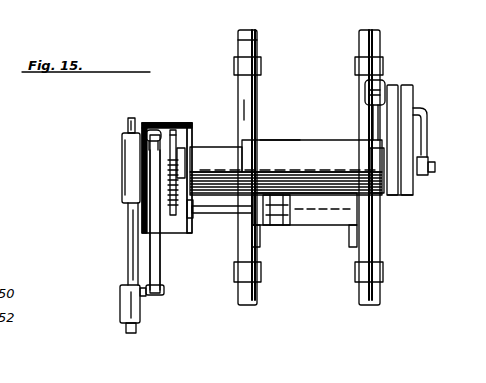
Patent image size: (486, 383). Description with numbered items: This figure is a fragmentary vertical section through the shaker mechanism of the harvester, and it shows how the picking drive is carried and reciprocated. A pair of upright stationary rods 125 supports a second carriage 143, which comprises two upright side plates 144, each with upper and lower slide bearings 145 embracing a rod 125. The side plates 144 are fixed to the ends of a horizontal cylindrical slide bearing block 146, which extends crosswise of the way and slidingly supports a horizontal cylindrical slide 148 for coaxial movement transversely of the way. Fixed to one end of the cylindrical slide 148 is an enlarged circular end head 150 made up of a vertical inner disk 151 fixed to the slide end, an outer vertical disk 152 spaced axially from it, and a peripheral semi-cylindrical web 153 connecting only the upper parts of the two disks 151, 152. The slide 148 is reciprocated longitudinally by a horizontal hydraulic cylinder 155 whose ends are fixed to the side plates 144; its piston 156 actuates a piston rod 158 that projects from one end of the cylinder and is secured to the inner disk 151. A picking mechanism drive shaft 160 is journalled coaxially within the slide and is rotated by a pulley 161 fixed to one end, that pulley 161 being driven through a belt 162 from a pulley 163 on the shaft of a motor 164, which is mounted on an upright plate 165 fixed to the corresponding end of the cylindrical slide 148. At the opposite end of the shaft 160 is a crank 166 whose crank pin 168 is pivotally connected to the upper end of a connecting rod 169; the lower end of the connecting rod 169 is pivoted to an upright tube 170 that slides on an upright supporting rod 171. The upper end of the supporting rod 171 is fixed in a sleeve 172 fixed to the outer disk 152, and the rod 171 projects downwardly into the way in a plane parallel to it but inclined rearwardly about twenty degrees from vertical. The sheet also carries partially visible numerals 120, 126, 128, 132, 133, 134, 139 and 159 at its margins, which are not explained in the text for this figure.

The assembly 120 is at (428, 68).
The stationary rod 125 is at (238, 37).
The member 126 is at (485, 325).
The member 128 is at (485, 300).
The member 132 is at (485, 182).
The member 133 is at (485, 280).
The member 134 is at (485, 266).
The member 139 is at (485, 205).
The second carriage 143 is at (266, 62).
The side plate 144 is at (248, 107).
The slide bearing 145 is at (262, 70).
The slide bearing block 146 is at (278, 140).
The cylindrical slide 148 is at (232, 161).
The end head 150 is at (156, 113).
The inner disk 151 is at (193, 138).
The outer disk 152 is at (140, 163).
The web 153 is at (168, 124).
The hydraulic cylinder 155 is at (330, 222).
The piston 156 is at (278, 228).
The piston rod 158 is at (216, 214).
The member 159 is at (485, 241).
The picking mechanism drive shaft 160 is at (435, 166).
The pulley 161 is at (412, 194).
The belt 162 is at (400, 110).
The pulley 163 is at (414, 87).
The motor 164 is at (385, 82).
The upright plate 165 is at (370, 131).
The crank 166 is at (188, 214).
The crank pin 168 is at (146, 138).
The connecting rod 169 is at (160, 266).
The upright tube 170 is at (141, 315).
The supporting rod 171 is at (130, 267).
The sleeve 172 is at (128, 192).